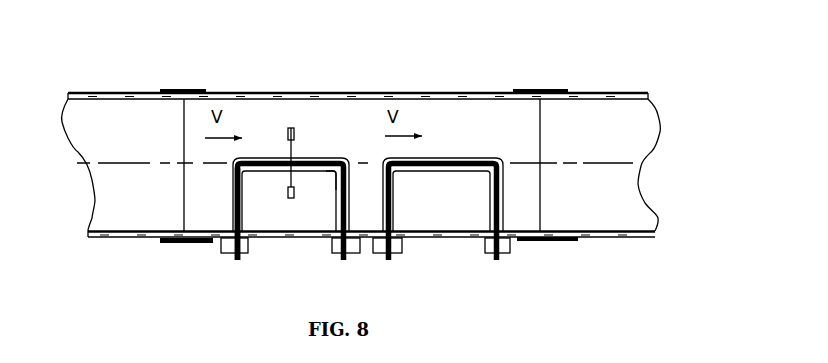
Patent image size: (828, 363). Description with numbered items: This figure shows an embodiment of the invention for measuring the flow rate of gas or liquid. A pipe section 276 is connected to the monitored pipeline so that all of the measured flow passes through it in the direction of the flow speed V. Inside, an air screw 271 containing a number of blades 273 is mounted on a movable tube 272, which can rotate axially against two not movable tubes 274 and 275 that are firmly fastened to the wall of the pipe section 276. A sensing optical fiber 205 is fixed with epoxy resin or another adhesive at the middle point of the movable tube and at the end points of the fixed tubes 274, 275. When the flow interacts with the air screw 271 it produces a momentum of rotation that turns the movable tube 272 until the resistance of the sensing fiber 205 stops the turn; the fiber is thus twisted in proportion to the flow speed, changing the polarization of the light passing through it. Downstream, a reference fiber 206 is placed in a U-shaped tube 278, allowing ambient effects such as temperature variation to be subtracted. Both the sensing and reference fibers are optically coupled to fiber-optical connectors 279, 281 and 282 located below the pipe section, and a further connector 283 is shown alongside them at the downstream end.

The sensing optical fiber 205 is at (267, 161).
The reference fiber 206 is at (437, 171).
The air screw 271 is at (311, 157).
The movable tube 272 is at (293, 172).
The blades 273 is at (292, 128).
The not movable tube 274 is at (233, 175).
The not movable tube 275 is at (337, 178).
The pipe section 276 is at (415, 89).
The U-shaped tube 278 is at (477, 171).
The fiber-optical connector 279 is at (221, 250).
The fiber-optical connector 281 is at (335, 253).
The fiber-optical connector 282 is at (374, 252).
The fastening nut 283 is at (510, 252).